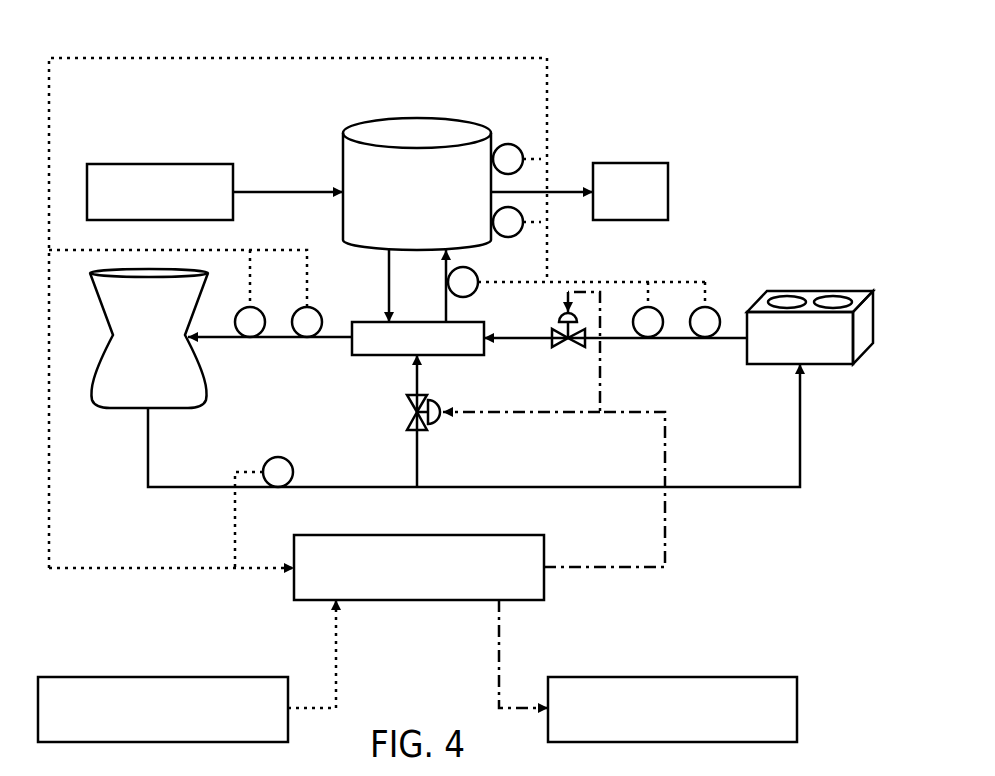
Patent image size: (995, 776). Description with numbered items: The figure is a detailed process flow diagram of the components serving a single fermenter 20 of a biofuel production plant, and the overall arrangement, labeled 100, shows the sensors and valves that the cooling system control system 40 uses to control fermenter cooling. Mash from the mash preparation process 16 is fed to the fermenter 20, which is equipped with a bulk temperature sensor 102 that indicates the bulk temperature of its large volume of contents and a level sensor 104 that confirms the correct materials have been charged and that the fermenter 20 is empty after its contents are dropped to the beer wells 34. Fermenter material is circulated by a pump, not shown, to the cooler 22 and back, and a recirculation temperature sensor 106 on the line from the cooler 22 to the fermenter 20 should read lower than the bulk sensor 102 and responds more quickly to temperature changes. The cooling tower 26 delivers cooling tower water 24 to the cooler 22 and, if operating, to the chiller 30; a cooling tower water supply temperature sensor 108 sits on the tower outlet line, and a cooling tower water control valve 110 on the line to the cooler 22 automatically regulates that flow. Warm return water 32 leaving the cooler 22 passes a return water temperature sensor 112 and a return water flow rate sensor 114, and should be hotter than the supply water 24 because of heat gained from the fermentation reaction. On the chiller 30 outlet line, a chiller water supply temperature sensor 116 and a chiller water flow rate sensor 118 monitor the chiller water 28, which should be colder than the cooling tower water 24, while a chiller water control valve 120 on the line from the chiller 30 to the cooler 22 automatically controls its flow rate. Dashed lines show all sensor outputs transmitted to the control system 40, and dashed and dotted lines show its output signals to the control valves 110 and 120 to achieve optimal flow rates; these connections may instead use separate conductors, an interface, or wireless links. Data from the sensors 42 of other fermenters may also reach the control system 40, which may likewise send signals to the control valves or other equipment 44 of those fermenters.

The brewery cooling system 100 is at (638, 53).
The mash preparation process 16 is at (155, 164).
The fermenter 20 is at (402, 118).
The bulk temperature sensor 102 is at (521, 149).
The level sensor 104 is at (521, 232).
The beer wells 34 is at (622, 163).
The recirculation temperature sensor 106 is at (473, 295).
The cooler 22 is at (469, 357).
The return water 32 is at (214, 340).
The return water flow rate sensor 114 is at (257, 308).
The return water temperature sensor 112 is at (312, 308).
The cooling tower 26 is at (205, 402).
The cooling tower water 24 is at (331, 487).
The cooling tower water supply temperature sensor 108 is at (282, 457).
The cooling tower water control valve 110 is at (437, 424).
The chiller water control valve 120 is at (583, 346).
The chiller water 28 is at (735, 340).
The chiller water flow rate sensor 118 is at (654, 308).
The chiller water supply temperature sensor 116 is at (711, 308).
The chiller 30 is at (810, 291).
The cooling system control system 40 is at (400, 535).
The sensors of other fermenters 42 is at (143, 677).
The other equipment of the other fermenters 44 is at (653, 677).